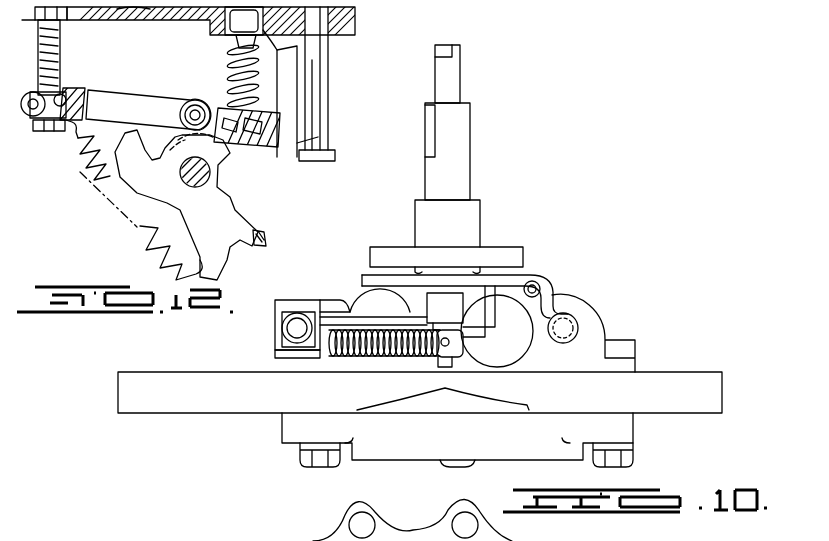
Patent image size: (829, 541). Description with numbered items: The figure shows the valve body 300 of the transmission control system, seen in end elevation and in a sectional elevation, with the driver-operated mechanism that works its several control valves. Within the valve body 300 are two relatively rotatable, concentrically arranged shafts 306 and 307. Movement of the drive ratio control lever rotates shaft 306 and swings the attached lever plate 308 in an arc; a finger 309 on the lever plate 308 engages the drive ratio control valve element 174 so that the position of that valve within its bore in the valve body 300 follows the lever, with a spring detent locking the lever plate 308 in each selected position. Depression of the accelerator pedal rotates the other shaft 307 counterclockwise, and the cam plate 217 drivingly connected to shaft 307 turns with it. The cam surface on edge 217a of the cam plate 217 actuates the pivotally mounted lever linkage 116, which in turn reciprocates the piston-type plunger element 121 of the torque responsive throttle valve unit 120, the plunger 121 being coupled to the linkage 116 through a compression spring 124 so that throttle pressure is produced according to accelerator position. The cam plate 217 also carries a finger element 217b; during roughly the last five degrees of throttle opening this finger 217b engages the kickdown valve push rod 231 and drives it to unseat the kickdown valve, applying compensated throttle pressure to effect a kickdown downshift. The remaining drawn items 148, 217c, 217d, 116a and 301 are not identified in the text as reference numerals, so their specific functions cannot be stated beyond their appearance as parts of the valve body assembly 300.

In FIG. 12, the frame plate 148 is at (100, 22).
In FIG. 12, the throttle valve plunger element 121 is at (244, 27).
In FIG. 12, the pivotally mounted lever linkage 116 is at (108, 95).
In FIG. 10, the pivotally mounted lever linkage 116 is at (307, 280).
In FIG. 12, the lever arm 217d is at (166, 150).
In FIG. 12, the return spring 217c is at (140, 208).
In FIG. 12, the rotatable cam plate 217 is at (245, 208).
In FIG. 12, the rotatable shaft 307 is at (210, 172).
In FIG. 10, the rotatable shaft 307 is at (448, 75).
In FIG. 12, the cam surface edge 217a is at (215, 150).
In FIG. 12, the finger element 217b is at (265, 231).
In FIG. 10, the finger element 217b is at (528, 348).
In FIG. 12, the torque responsive throttle valve unit 120 is at (275, 50).
In FIG. 12, the compression spring 124 is at (226, 62).
In FIG. 12, the compression spring 116a is at (226, 80).
In FIG. 12, the drive ratio control valve element 174 is at (330, 112).
In FIG. 10, the drive ratio control valve element 174 is at (580, 328).
In FIG. 12, the kickdown valve plunger rod 231 is at (300, 144).
In FIG. 10, the kickdown valve plunger rod 231 is at (546, 282).
In FIG. 10, the base plate 301 is at (716, 371).
In FIG. 10, the rotatable shaft 306 is at (462, 146).
In FIG. 10, the lever plate 308 is at (376, 275).
In FIG. 10, the valve body 300 is at (358, 262).
In FIG. 10, the finger 309 is at (582, 318).